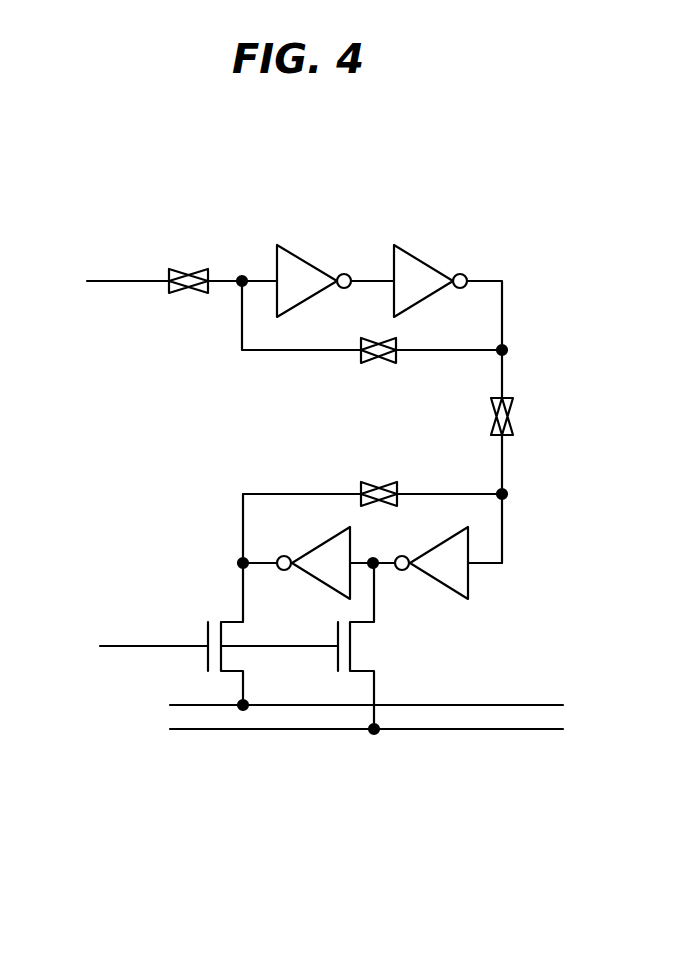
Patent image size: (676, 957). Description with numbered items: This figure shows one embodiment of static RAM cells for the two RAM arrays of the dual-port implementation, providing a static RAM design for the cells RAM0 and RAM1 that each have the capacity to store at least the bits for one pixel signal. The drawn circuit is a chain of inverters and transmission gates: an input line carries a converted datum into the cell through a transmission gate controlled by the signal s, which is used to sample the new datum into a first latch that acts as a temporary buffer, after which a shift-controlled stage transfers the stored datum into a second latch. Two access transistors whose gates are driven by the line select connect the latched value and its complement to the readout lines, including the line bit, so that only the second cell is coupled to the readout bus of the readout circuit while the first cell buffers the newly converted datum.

The sample control signal transmission gate s is at (188, 293).
The select line with access transistors select is at (225, 646).
The bit line bit is at (366, 695).